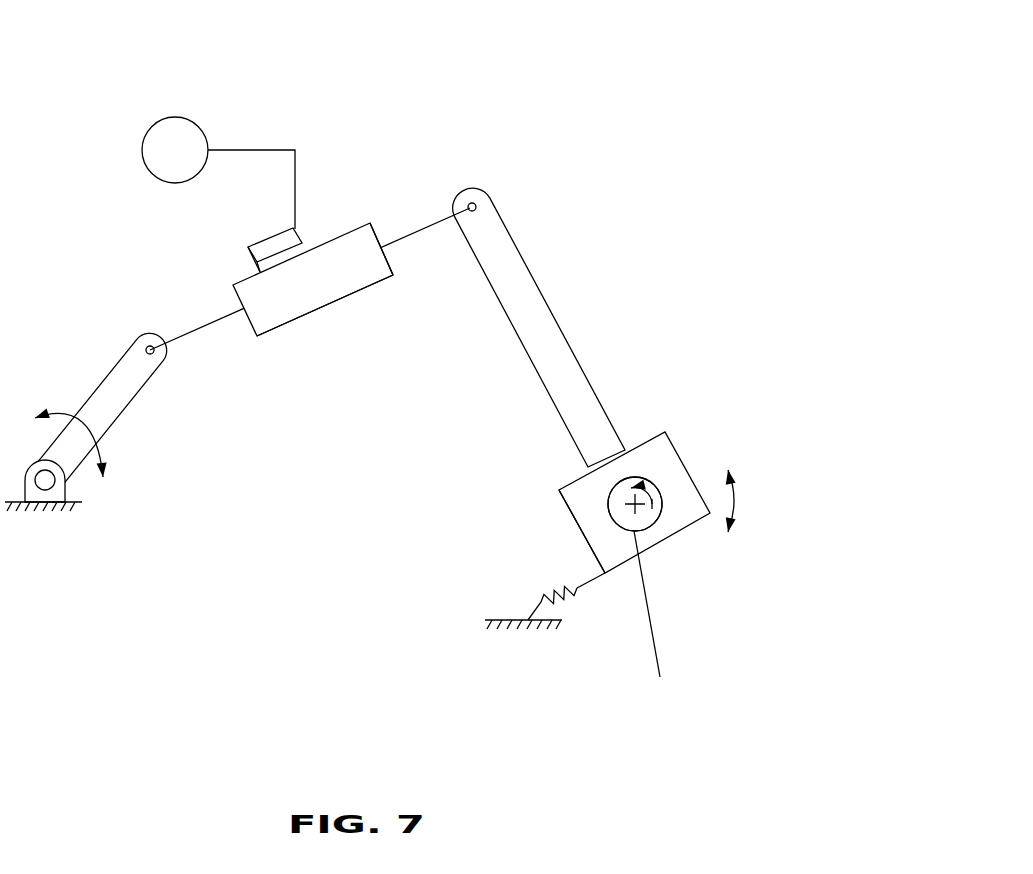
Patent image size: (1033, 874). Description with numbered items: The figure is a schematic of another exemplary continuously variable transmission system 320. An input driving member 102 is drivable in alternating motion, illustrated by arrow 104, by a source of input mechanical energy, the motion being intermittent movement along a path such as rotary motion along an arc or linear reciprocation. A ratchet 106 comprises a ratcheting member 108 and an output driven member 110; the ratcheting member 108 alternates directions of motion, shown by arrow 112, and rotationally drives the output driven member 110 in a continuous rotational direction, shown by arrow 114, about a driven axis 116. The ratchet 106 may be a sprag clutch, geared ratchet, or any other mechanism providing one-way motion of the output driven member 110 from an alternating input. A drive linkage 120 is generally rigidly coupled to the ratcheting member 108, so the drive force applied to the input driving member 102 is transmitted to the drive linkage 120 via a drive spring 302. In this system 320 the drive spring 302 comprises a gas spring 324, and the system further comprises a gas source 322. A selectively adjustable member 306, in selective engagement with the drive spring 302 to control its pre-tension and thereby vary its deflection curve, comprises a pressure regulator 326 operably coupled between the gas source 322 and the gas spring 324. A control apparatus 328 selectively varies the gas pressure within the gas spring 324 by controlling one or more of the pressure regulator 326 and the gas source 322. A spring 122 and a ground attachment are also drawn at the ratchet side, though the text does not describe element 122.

The input driving member 102 is at (108, 368).
The arrow 104 is at (100, 457).
The ratchet 106 is at (666, 560).
The ratcheting member 108 is at (566, 507).
The output driven member 110 is at (660, 677).
The arrow 112 is at (735, 508).
The arrow 114 is at (653, 485).
The driven axis 116 is at (612, 517).
The drive linkage 120 is at (557, 323).
The spring 122 is at (577, 592).
The drive spring 302 is at (341, 226).
The selectively adjustable member 306 is at (378, 311).
The continuously variable transmission system 320 is at (559, 59).
The gas source 322 is at (165, 118).
The gas spring 324 is at (286, 341).
The pressure regulator 326 is at (261, 241).
The control apparatus 328 is at (232, 255).